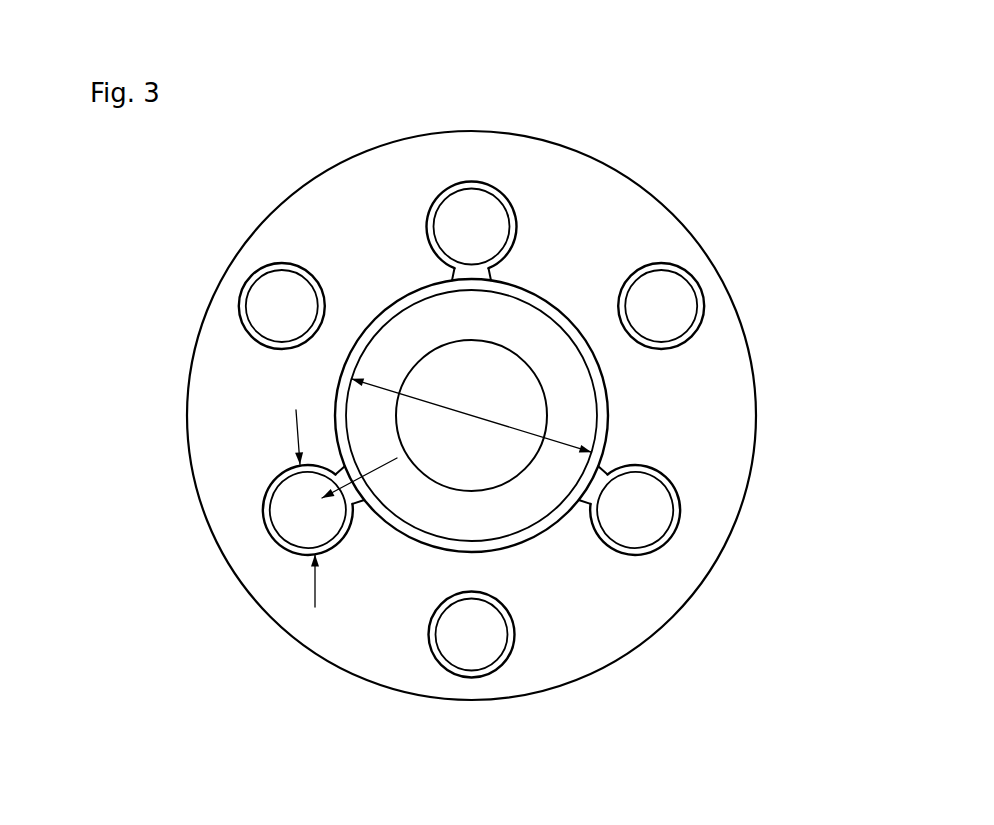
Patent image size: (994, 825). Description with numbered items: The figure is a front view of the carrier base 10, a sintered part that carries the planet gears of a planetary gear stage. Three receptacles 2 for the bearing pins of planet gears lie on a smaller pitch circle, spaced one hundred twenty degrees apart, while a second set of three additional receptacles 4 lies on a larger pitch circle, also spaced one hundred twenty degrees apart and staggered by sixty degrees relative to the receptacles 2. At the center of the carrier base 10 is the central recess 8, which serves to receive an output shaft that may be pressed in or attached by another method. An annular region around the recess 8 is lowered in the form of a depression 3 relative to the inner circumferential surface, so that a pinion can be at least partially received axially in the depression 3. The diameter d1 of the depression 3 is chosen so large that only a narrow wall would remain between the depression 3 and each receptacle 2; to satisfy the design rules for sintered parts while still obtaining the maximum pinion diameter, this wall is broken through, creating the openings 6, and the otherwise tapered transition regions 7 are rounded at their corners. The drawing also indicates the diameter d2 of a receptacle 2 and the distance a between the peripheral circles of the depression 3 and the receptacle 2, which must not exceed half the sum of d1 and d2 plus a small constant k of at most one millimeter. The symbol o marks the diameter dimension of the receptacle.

The receptacles 2 is at (472, 352).
The depression 3 is at (522, 505).
The second set of receptacles 4 is at (267, 298).
The openings 6 is at (473, 265).
The transition regions 7 is at (494, 276).
The central recess 8 is at (515, 406).
The carrier base 10 is at (762, 187).
The diameter of the depression d1 is at (472, 408).
The diameter of a receptacle d2 is at (333, 580).
The distance between the peripheral circles of the depression and the receptacle a is at (359, 468).
The diameter symbol o is at (287, 436).